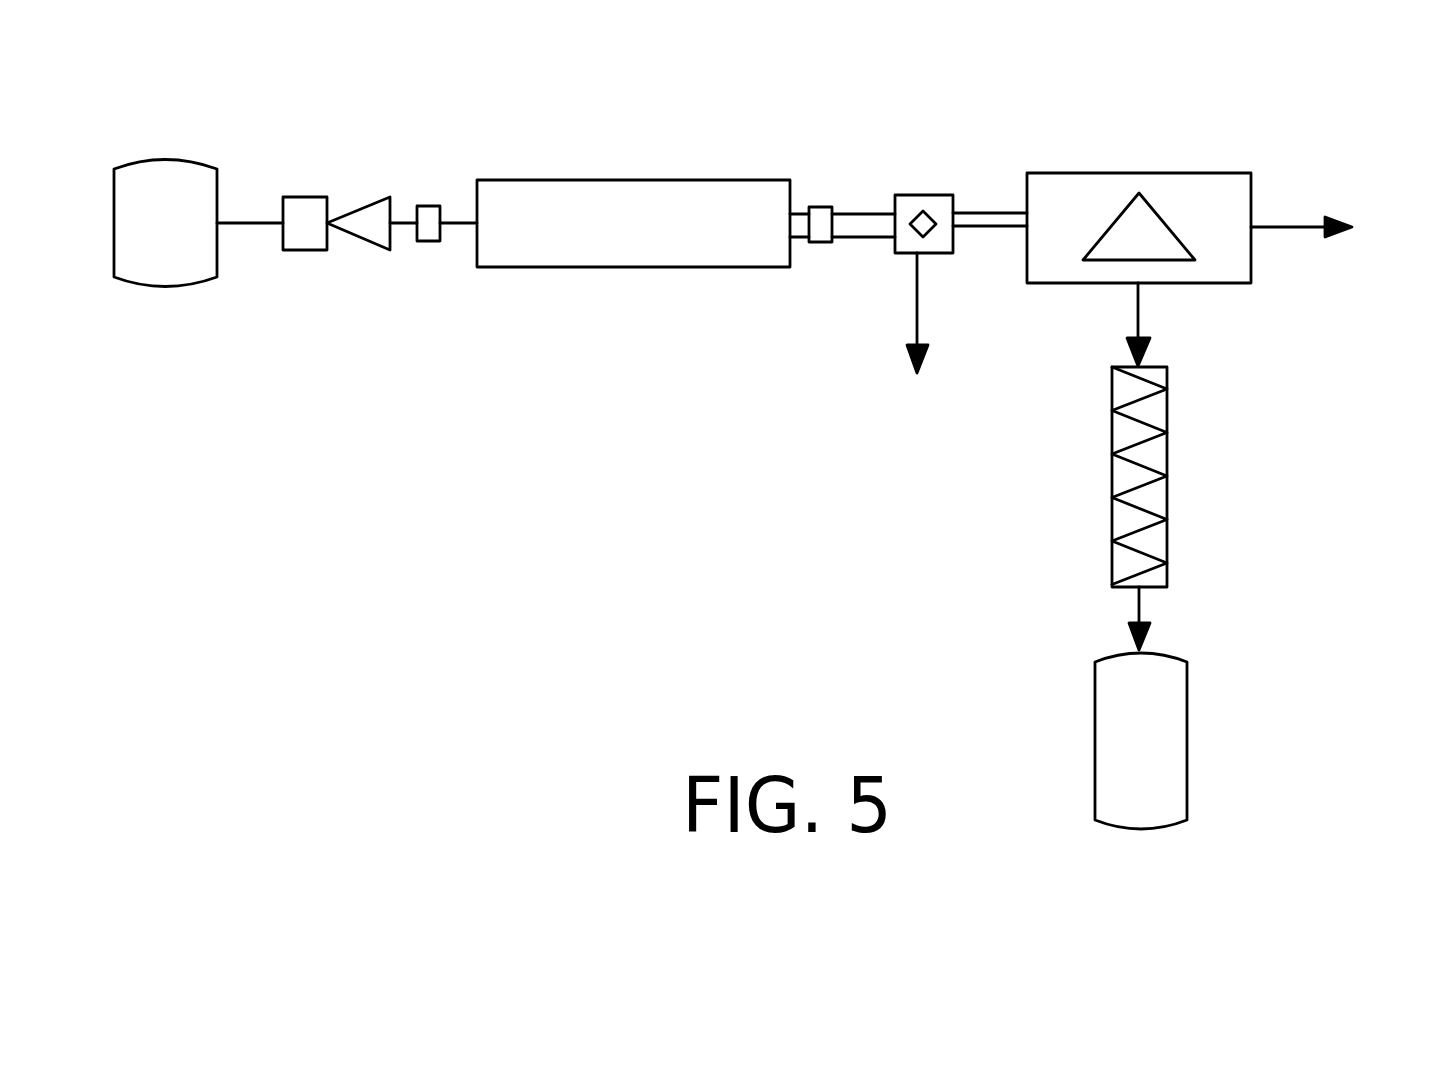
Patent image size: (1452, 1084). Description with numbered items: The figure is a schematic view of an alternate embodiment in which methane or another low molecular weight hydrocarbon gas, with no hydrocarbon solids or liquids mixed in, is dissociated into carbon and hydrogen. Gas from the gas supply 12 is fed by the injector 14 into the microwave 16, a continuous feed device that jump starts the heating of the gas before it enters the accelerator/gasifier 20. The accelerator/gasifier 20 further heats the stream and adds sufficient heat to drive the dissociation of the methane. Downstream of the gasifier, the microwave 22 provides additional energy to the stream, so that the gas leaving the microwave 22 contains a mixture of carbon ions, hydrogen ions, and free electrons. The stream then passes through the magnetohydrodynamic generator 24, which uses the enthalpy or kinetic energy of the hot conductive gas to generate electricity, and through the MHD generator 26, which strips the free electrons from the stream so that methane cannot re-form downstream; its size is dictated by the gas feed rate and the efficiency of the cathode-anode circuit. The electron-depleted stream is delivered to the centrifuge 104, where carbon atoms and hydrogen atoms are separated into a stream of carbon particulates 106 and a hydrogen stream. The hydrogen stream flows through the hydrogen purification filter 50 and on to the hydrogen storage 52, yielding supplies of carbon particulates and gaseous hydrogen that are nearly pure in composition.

The gas supply 12 is at (205, 186).
The injector 14 is at (327, 250).
The microwave 16 is at (435, 242).
The accelerator/gasifier 20 is at (678, 267).
The microwave 22 is at (827, 242).
The magnetohydrodynamic generator 24 is at (893, 240).
The MHD generator 26 is at (917, 312).
The centrifuge 104 is at (1139, 172).
The carbon particulates 106 is at (1300, 227).
The hydrogen purification filter 50 is at (1153, 488).
The hydrogen storage 52 is at (1188, 693).